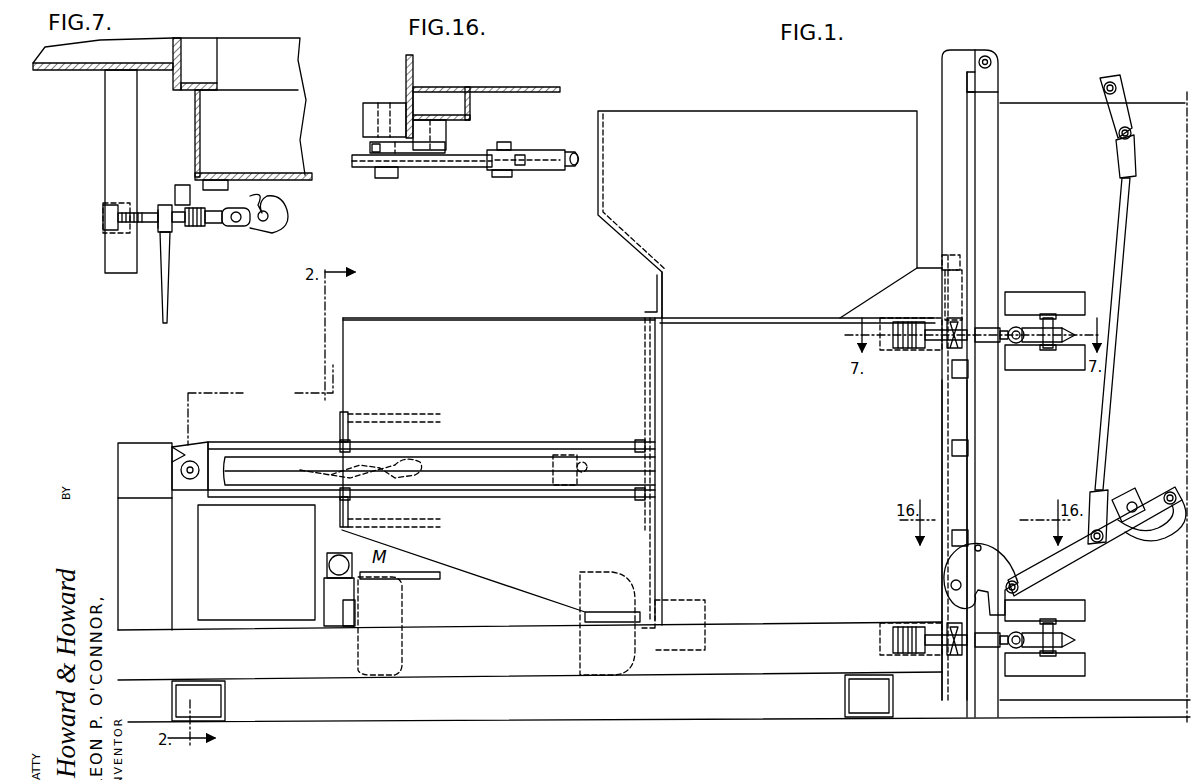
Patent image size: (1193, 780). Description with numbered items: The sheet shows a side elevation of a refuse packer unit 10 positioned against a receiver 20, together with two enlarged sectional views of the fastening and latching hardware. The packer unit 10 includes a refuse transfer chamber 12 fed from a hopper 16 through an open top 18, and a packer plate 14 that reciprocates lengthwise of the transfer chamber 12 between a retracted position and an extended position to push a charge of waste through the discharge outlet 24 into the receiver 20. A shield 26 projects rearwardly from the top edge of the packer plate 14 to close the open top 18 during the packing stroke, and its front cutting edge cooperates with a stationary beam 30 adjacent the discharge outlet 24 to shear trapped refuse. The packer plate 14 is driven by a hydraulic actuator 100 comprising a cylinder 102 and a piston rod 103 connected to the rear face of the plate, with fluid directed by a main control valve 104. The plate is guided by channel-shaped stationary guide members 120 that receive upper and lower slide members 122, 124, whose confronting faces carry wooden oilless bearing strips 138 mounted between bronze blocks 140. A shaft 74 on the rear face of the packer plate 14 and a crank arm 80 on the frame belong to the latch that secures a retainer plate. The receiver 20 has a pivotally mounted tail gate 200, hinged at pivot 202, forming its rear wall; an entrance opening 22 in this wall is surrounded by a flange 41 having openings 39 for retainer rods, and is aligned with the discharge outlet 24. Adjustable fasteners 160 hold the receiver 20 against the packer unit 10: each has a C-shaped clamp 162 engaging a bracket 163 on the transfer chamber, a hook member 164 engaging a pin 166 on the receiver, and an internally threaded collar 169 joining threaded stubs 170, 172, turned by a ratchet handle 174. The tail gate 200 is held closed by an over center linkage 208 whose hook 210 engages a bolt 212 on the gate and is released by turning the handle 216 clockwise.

In FIG. 1, the packer unit 10 is at (585, 316).
In FIG. 7, the refuse transfer chamber 12 is at (80, 74).
In FIG. 1, the refuse transfer chamber 12 is at (815, 622).
In FIG. 7, the packer plate 14 is at (178, 88).
In FIG. 1, the packer plate 14 is at (650, 356).
In FIG. 1, the hopper 16 is at (708, 110).
In FIG. 1, the open top 18 is at (780, 318).
In FIG. 7, the receiver 20 is at (265, 50).
In FIG. 16, the receiver 20 is at (543, 92).
In FIG. 1, the receiver 20 is at (1070, 83).
In FIG. 1, the entrance opening 22 is at (952, 256).
In FIG. 1, the discharge outlet 24 is at (955, 430).
In FIG. 1, the shield 26 is at (484, 318).
In FIG. 1, the stationary beam 30 is at (968, 280).
In FIG. 1, the openings 39 is at (952, 370).
In FIG. 1, the flange 41 is at (950, 425).
In FIG. 1, the shaft 74 is at (945, 312).
In FIG. 1, the crank arm 80 is at (300, 470).
In FIG. 1, the hydraulic actuator 100 is at (250, 441).
In FIG. 1, the cylinder 102 is at (265, 497).
In FIG. 1, the piston rod 103 is at (566, 455).
In FIG. 1, the main control valve 104 is at (327, 588).
In FIG. 1, the stationary guide members 120 is at (476, 455).
In FIG. 1, the upper slide member 122 is at (340, 420).
In FIG. 1, the lower slide member 124 is at (340, 515).
In FIG. 1, the oilless bearing strips 138 is at (612, 447).
In FIG. 1, the bronze blocks 140 is at (355, 446).
In FIG. 7, the adjustable fasteners 160 is at (183, 232).
In FIG. 1, the adjustable fasteners 160 is at (1010, 328).
In FIG. 7, the C-shaped clamp 162 is at (103, 214).
In FIG. 1, the C-shaped clamp 162 is at (895, 340).
In FIG. 7, the bracket 163 is at (138, 152).
In FIG. 1, the bracket 163 is at (910, 348).
In FIG. 7, the hook member 164 is at (268, 232).
In FIG. 1, the hook member 164 is at (1040, 325).
In FIG. 7, the pin 166 is at (282, 212).
In FIG. 1, the pin 166 is at (1048, 352).
In FIG. 7, the internally threaded collar 169 is at (153, 210).
In FIG. 1, the internally threaded collar 169 is at (985, 328).
In FIG. 7, the threaded stub 170 is at (115, 226).
In FIG. 1, the threaded stub 170 is at (898, 330).
In FIG. 7, the threaded stub 172 is at (205, 224).
In FIG. 1, the threaded stub 172 is at (1003, 340).
In FIG. 7, the ratchet handle 174 is at (162, 296).
In FIG. 1, the ratchet handle 174 is at (952, 656).
In FIG. 16, the tail gate 200 is at (363, 120).
In FIG. 1, the tail gate 200 is at (940, 90).
In FIG. 1, the pivot 202 is at (991, 62).
In FIG. 16, the over center linkage 208 is at (527, 172).
In FIG. 1, the over center linkage 208 is at (1105, 480).
In FIG. 16, the hook 210 is at (465, 167).
In FIG. 1, the hook 210 is at (1010, 568).
In FIG. 16, the bolt 212 is at (388, 178).
In FIG. 1, the bolt 212 is at (950, 585).
In FIG. 1, the handle 216 is at (1178, 490).